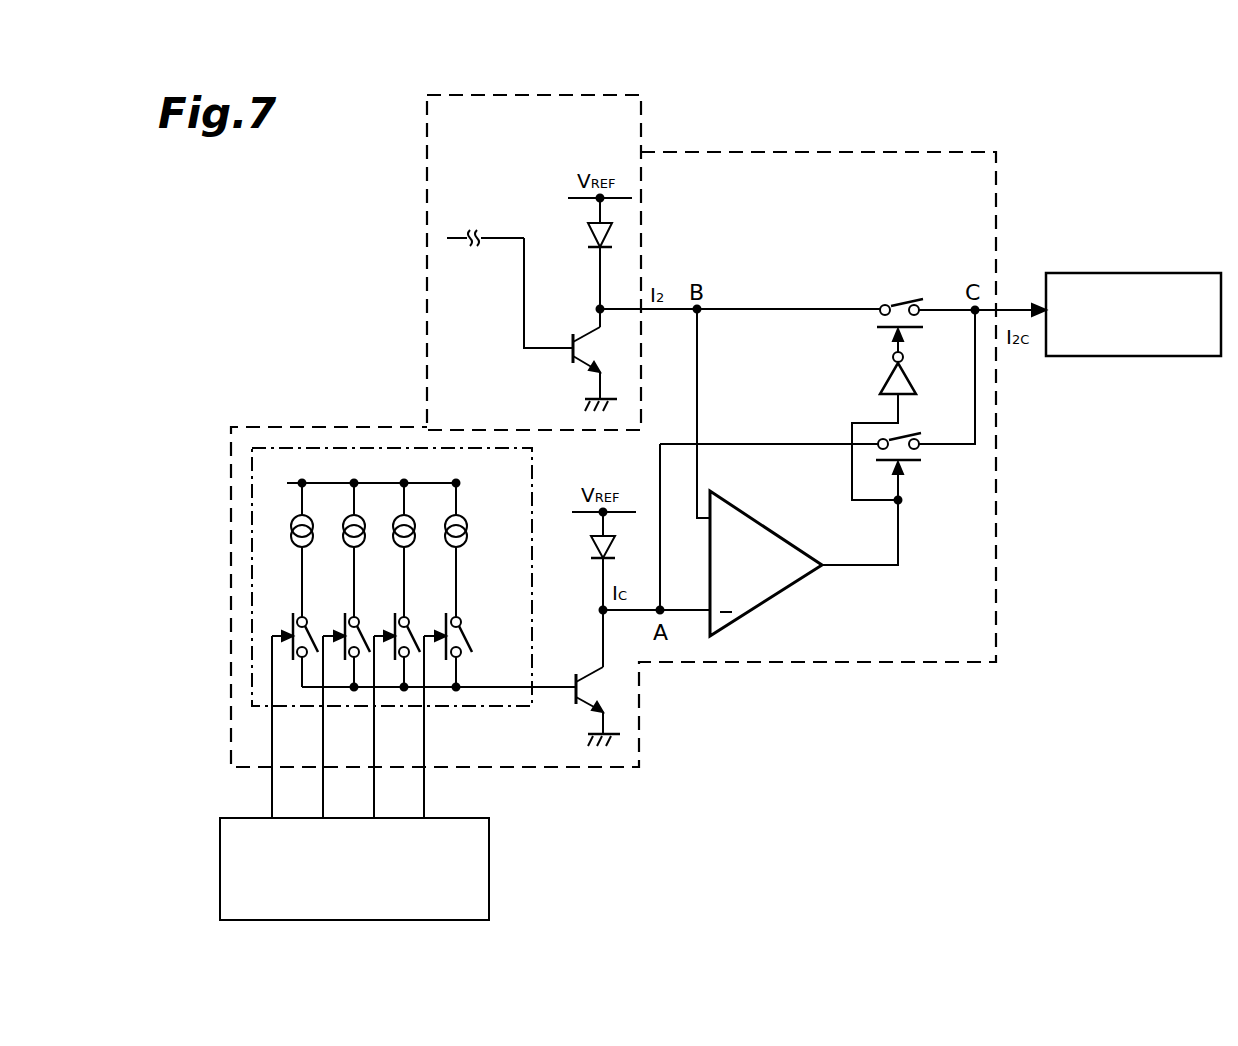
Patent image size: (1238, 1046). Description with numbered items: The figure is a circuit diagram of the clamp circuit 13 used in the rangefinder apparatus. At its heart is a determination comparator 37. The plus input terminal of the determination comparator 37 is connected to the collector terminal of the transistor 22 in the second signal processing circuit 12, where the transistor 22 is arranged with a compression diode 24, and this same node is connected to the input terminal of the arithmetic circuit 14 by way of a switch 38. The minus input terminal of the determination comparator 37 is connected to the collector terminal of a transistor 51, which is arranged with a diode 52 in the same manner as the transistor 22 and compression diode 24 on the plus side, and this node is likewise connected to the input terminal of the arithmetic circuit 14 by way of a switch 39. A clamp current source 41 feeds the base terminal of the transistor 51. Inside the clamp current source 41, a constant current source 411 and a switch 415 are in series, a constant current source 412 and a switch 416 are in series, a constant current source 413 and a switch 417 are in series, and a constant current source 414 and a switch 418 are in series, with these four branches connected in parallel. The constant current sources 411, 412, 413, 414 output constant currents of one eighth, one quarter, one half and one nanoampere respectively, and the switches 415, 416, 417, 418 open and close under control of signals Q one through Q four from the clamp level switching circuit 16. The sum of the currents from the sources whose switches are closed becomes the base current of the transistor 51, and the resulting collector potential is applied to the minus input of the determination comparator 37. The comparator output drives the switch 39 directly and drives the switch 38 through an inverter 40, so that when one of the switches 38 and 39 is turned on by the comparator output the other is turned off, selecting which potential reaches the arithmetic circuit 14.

The second signal processing circuit 12 is at (427, 154).
The clamp circuit 13 is at (640, 742).
The arithmetic circuit 14 is at (1114, 273).
The clamp level switching circuit 16 is at (489, 868).
The transistor 22 is at (573, 362).
The compression diode 24 is at (598, 238).
The determination comparator 37 is at (786, 592).
The switch 38 is at (908, 304).
The switch 39 is at (912, 466).
The inverter 40 is at (879, 384).
The clamp current source 41 is at (372, 633).
The constant current source 411 is at (311, 526).
The constant current source 412 is at (363, 526).
The constant current source 413 is at (413, 526).
The constant current source 414 is at (465, 526).
The switch 415 is at (303, 631).
The switch 416 is at (355, 631).
The switch 417 is at (405, 631).
The switch 418 is at (457, 631).
The transistor 51 is at (576, 710).
The diode 52 is at (593, 546).